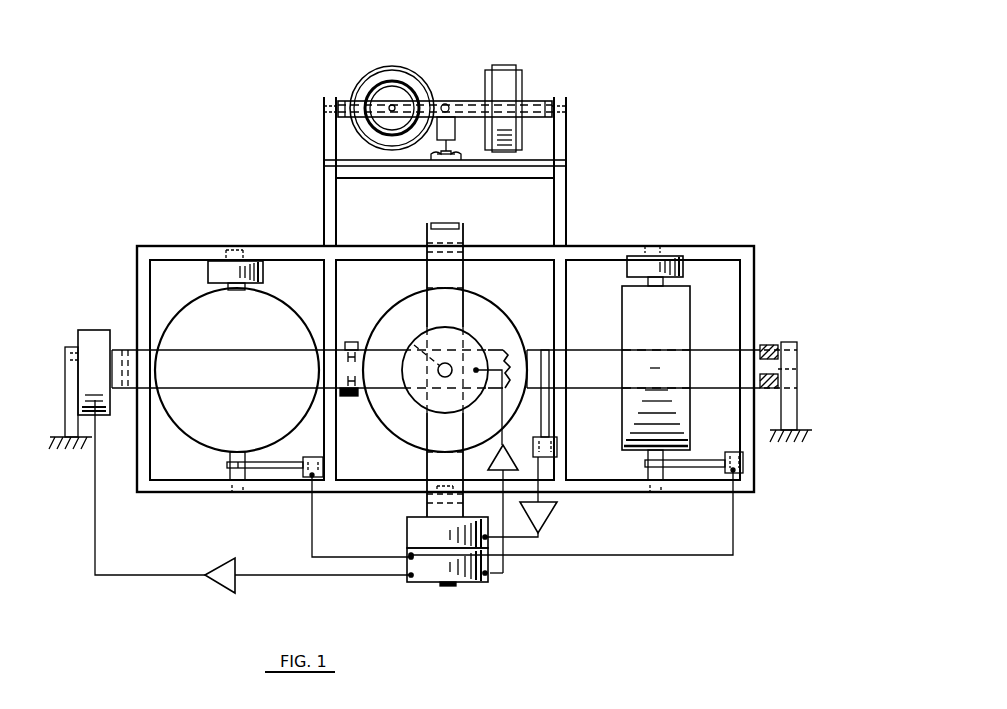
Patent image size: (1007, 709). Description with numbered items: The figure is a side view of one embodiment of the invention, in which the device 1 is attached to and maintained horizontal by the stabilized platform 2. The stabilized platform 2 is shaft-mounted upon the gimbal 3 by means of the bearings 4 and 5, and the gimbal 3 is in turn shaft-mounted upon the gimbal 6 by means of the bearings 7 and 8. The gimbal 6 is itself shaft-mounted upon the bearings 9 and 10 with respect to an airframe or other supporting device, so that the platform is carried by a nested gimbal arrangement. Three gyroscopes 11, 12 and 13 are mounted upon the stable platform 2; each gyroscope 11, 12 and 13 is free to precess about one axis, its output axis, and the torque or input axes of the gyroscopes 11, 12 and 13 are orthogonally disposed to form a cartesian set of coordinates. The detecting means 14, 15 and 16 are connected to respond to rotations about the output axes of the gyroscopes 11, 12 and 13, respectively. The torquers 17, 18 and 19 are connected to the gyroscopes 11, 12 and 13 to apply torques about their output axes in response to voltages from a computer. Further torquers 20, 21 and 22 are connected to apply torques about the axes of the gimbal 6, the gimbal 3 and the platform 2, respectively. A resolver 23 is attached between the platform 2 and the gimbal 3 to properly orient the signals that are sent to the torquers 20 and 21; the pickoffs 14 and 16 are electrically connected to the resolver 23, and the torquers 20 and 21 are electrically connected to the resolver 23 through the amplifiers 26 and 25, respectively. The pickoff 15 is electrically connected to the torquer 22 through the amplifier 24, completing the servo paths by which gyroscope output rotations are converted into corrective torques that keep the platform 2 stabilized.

The device 1 is at (455, 75).
The stabilized platform 2 is at (597, 236).
The gimbal 3 is at (435, 463).
The bearing 4 is at (464, 226).
The bearing 5 is at (455, 512).
The gimbal 6 is at (288, 365).
The bearing 7 is at (440, 376).
The bearing 8 is at (419, 348).
The bearing 9 is at (123, 396).
The bearing 10 is at (768, 388).
The gyroscope 11 is at (286, 360).
The gyroscope 12 is at (492, 312).
The gyroscope 13 is at (680, 322).
The detecting means 14 is at (314, 457).
The detecting means 15 is at (557, 443).
The detecting means 16 is at (734, 452).
The torquer 17 is at (212, 276).
The torquer 18 is at (350, 342).
The torquer 19 is at (632, 273).
The torquer 20 is at (95, 338).
The torquer 21 is at (466, 348).
The torquer 22 is at (415, 528).
The resolver 23 is at (431, 577).
The amplifier 24 is at (546, 512).
The amplifier 25 is at (506, 450).
The amplifier 26 is at (234, 590).